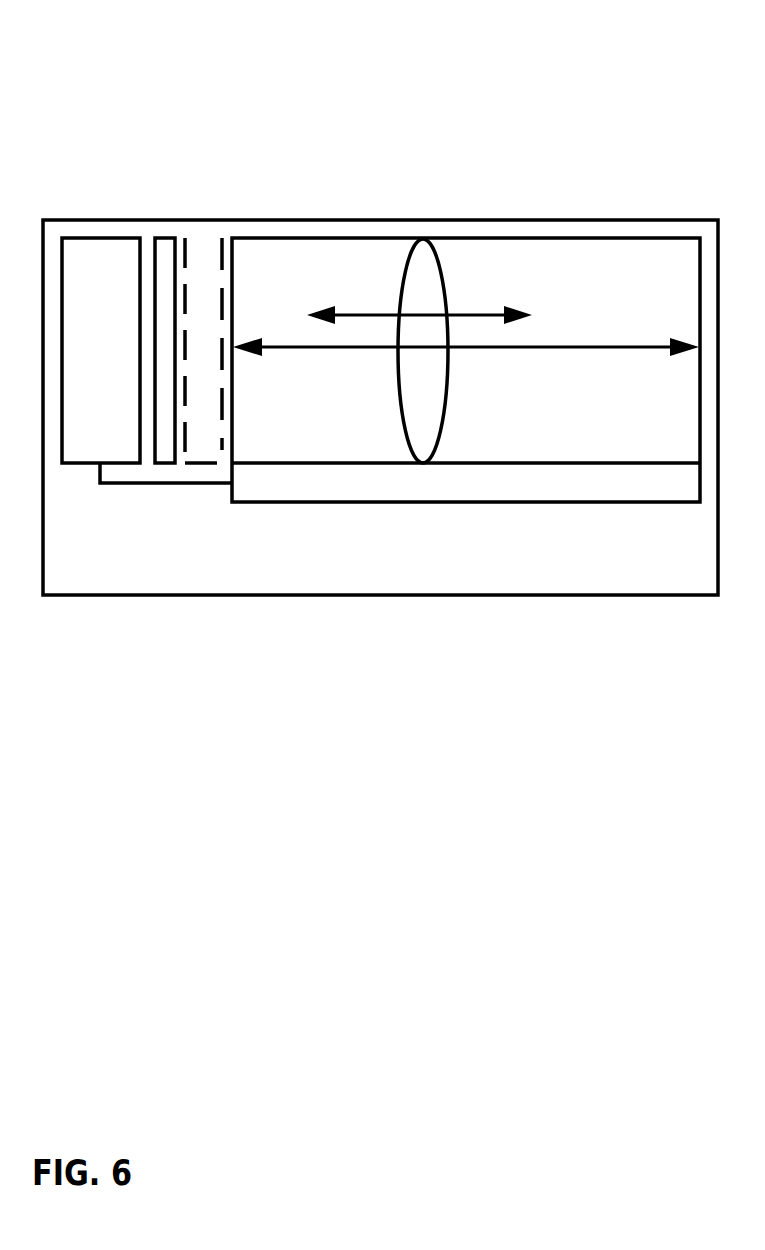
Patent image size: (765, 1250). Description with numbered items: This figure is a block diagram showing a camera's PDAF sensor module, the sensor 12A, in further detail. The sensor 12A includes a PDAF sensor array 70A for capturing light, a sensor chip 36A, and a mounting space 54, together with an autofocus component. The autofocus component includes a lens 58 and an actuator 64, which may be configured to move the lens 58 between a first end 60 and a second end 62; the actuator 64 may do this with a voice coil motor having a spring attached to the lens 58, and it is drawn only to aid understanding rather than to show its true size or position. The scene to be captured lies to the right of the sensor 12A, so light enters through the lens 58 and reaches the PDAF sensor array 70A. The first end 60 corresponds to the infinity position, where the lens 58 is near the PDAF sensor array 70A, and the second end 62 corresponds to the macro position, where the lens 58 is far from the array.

The sensor 12A is at (403, 582).
The sensor chip 36A is at (90, 237).
The PDAF sensor array 70A is at (162, 237).
The mounting space 54 is at (203, 237).
The lens 58 is at (420, 293).
The first end 60 is at (226, 242).
The second end 62 is at (700, 240).
The actuator 64 is at (478, 493).